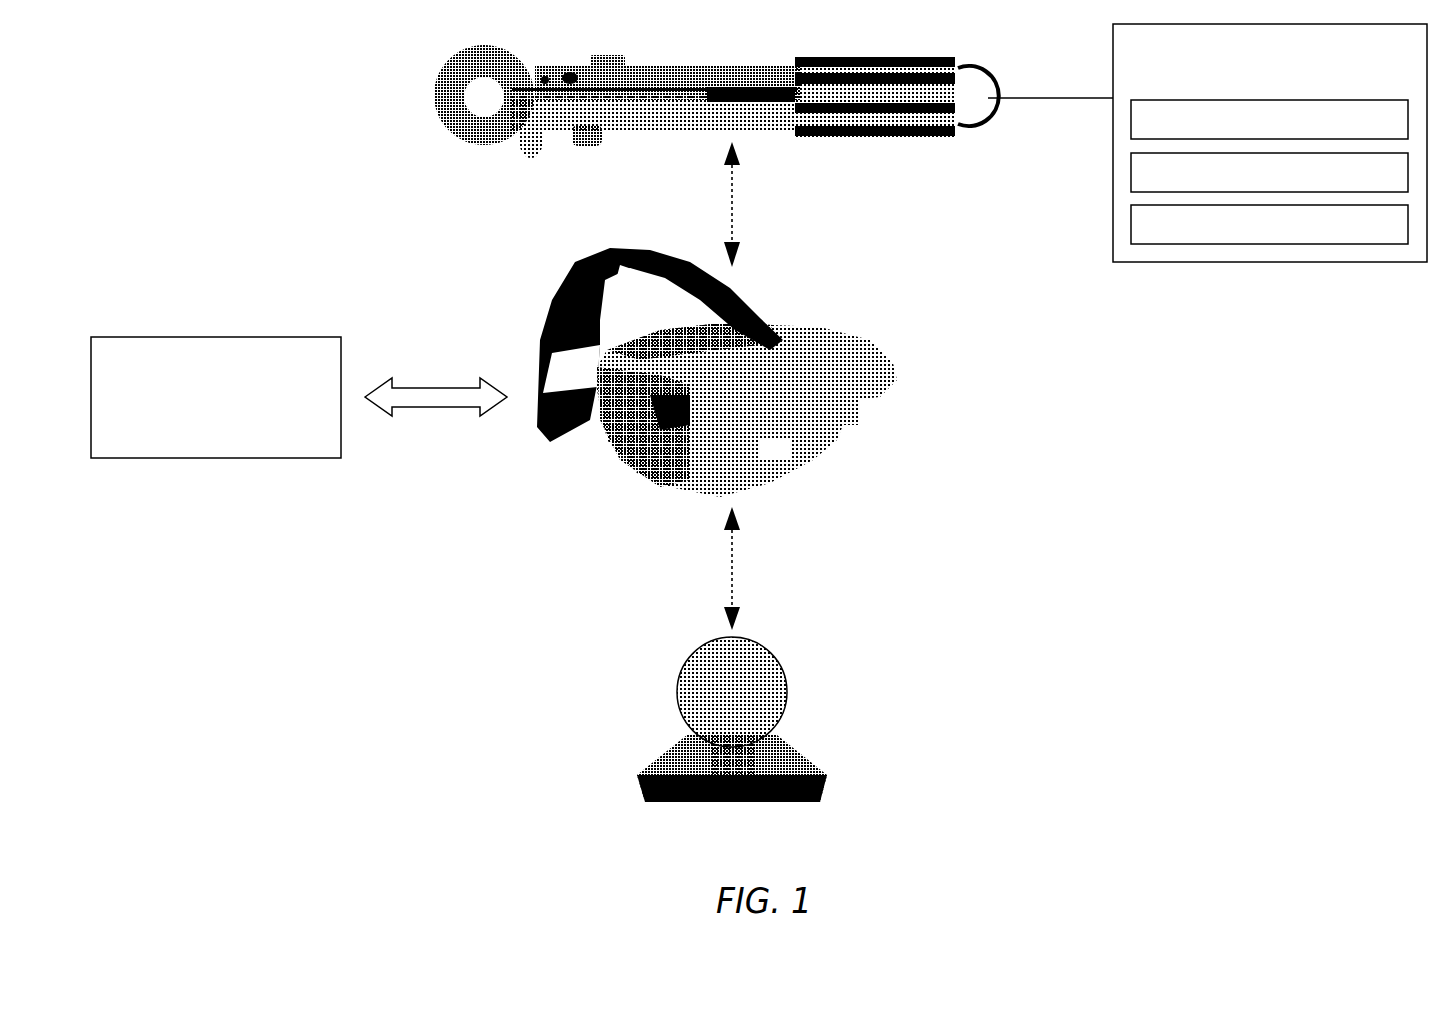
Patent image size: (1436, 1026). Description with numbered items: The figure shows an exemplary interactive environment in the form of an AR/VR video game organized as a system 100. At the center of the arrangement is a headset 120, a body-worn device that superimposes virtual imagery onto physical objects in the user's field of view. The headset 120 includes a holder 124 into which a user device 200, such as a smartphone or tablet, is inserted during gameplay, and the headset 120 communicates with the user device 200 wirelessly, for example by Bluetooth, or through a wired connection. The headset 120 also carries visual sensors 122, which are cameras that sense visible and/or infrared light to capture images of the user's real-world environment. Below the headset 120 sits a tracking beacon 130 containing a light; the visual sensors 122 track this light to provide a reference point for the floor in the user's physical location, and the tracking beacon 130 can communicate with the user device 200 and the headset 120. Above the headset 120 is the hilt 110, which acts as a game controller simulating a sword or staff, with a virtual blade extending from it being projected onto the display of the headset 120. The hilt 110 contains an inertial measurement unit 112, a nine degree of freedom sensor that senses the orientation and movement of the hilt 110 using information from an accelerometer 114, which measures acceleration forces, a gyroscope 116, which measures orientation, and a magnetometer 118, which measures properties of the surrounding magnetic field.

The system 100 is at (463, 345).
The hilt 110 is at (845, 57).
The inertial measurement unit 112 is at (1270, 143).
The accelerometer 114 is at (1269, 119).
The gyroscope 116 is at (1269, 172).
The magnetometer 118 is at (1269, 224).
The headset 120 is at (820, 328).
The visual sensors 122 is at (703, 452).
The holder 124 is at (787, 447).
The tracking beacon 130 is at (786, 700).
The user device 200 is at (216, 397).